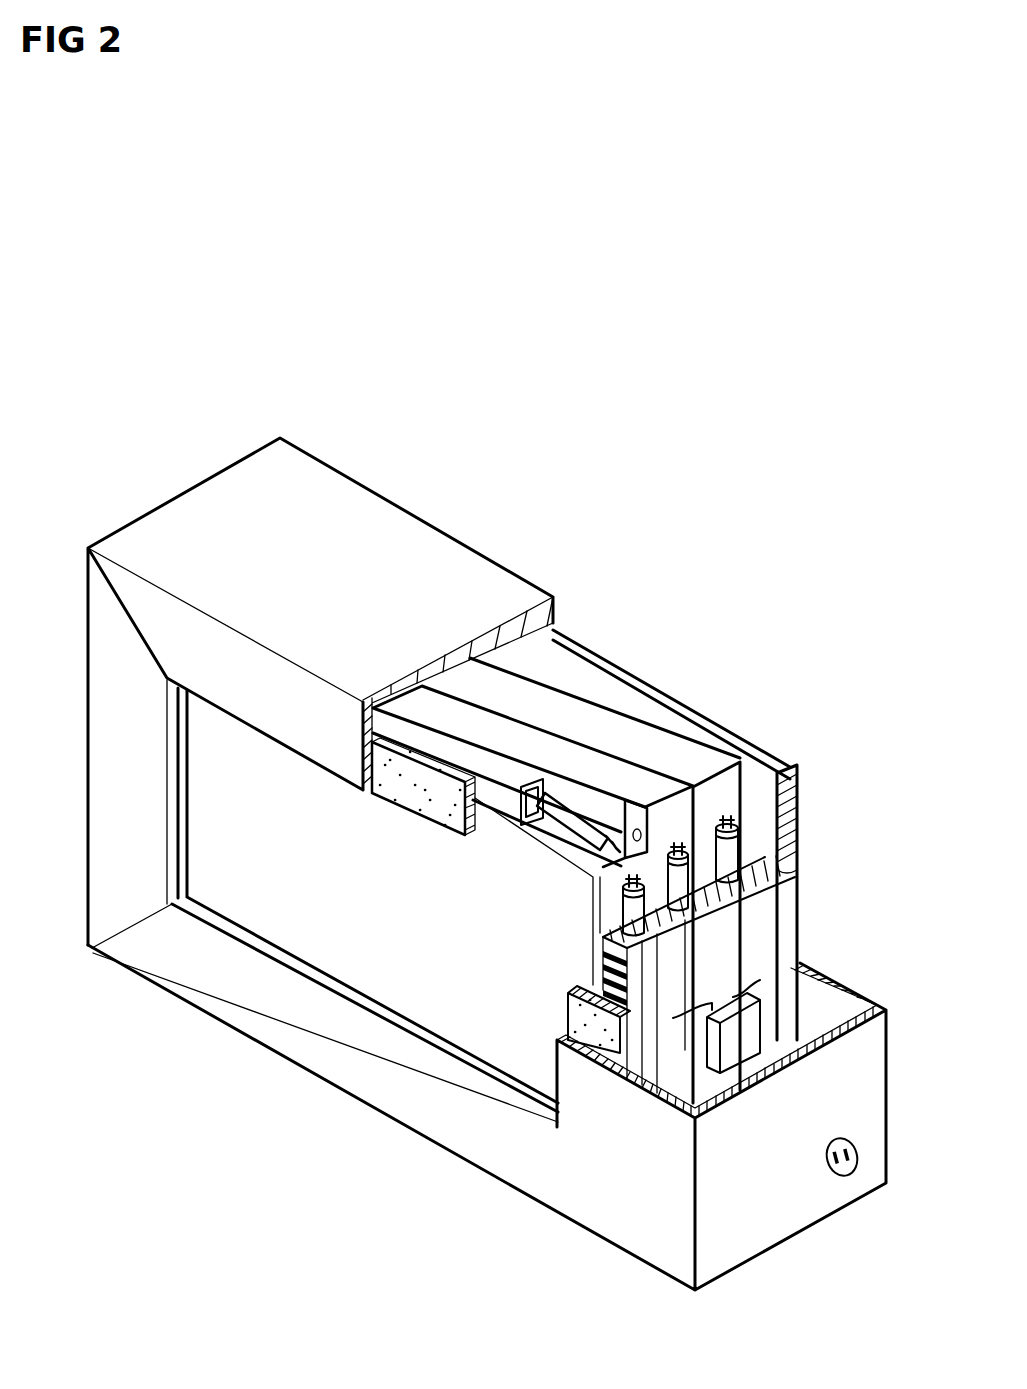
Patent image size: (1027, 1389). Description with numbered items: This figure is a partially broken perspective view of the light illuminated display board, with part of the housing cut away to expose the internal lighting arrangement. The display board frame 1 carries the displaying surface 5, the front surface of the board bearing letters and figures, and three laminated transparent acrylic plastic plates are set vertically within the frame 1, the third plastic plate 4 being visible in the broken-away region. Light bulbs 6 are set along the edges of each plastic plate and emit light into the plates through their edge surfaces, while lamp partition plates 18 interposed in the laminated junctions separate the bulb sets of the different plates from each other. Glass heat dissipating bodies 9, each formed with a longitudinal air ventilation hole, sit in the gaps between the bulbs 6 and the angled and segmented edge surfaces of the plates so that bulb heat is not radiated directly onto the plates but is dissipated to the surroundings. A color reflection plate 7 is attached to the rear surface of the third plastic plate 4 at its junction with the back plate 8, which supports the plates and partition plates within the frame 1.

The display board frame 1 is at (587, 1170).
The third transparent acrylic plastic plate 4 is at (710, 807).
The displaying surface 5 is at (522, 1057).
The light bulbs 6 is at (722, 762).
The color reflection plate 7 is at (665, 712).
The back plate 8 is at (805, 768).
The heat dissipating bodies 9 is at (790, 800).
The lamp partition plates 18 is at (587, 830).